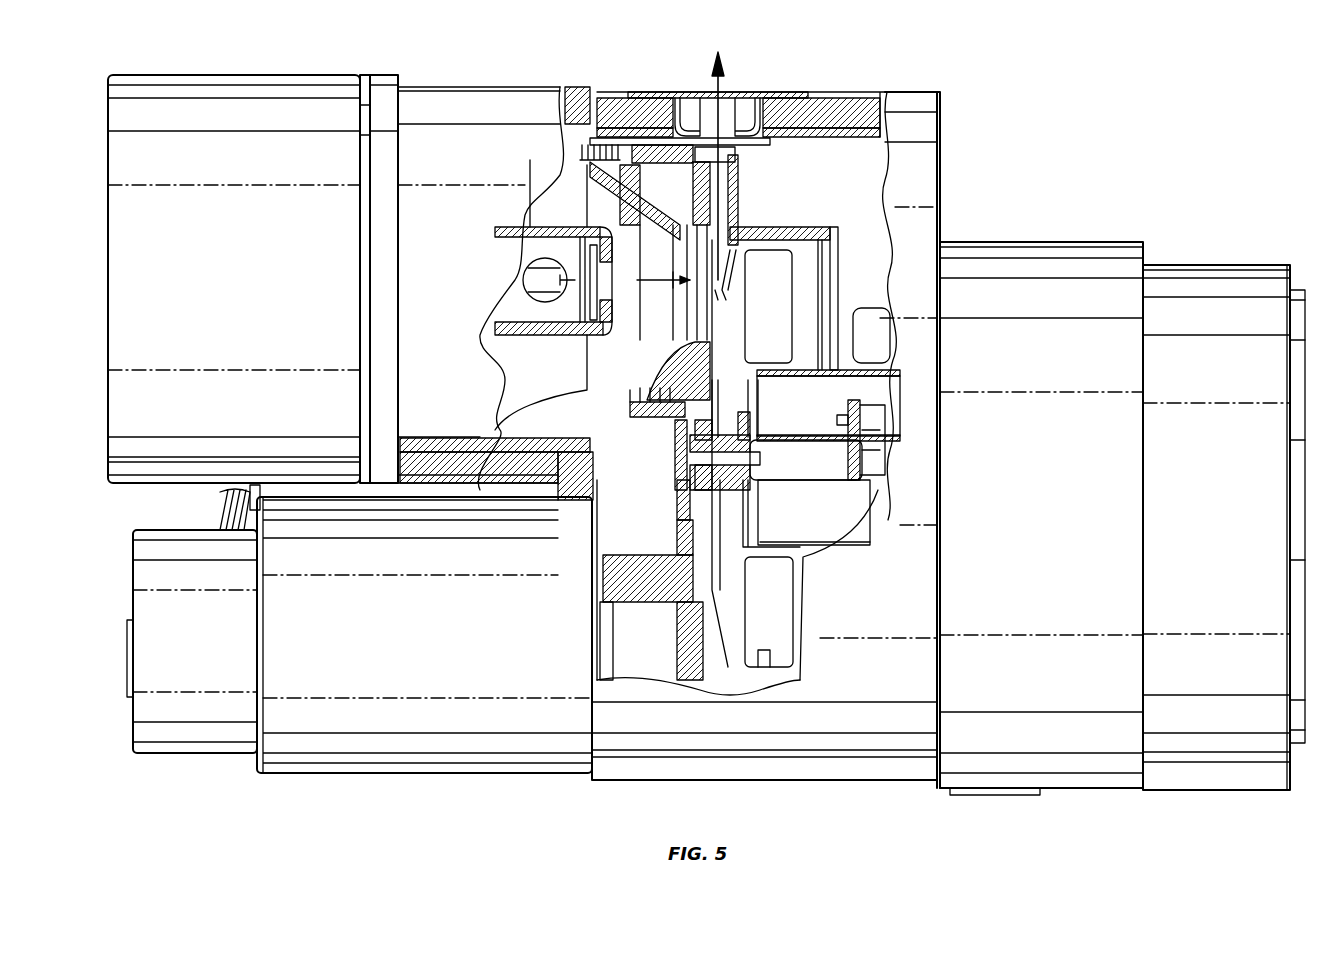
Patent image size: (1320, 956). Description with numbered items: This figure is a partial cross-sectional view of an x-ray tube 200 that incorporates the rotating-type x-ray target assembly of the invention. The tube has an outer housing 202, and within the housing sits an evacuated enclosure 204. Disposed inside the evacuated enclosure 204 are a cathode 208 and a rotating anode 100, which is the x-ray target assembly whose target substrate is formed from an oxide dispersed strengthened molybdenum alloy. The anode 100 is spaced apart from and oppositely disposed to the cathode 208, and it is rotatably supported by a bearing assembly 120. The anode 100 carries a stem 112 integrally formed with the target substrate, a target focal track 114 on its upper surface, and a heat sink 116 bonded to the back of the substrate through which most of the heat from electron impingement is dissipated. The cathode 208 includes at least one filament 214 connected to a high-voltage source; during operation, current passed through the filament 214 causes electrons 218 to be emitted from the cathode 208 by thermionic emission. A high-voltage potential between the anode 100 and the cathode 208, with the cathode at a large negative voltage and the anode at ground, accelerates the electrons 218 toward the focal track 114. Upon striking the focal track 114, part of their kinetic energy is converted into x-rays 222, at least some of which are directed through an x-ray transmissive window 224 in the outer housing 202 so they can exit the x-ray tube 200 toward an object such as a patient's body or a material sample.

The rotating anode 100 is at (750, 248).
The stem 112 is at (708, 463).
The target focal track 114 is at (738, 283).
The heat sink 116 is at (783, 265).
The bearing assembly 120 is at (825, 426).
The x-ray tube 200 is at (1117, 130).
The outer housing 202 is at (942, 158).
The evacuated enclosure 204 is at (521, 396).
The cathode 208 is at (614, 328).
The filament 214 is at (617, 262).
The electrons 218 is at (645, 282).
The x-rays 222 is at (716, 78).
The x-ray transmissive window 224 is at (740, 93).